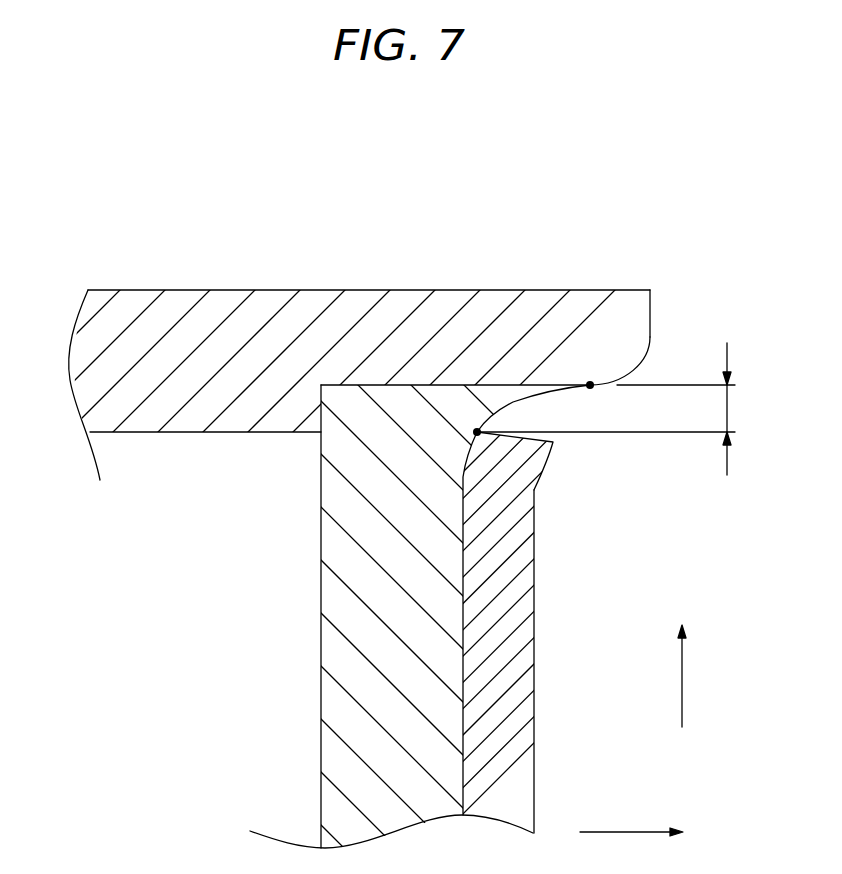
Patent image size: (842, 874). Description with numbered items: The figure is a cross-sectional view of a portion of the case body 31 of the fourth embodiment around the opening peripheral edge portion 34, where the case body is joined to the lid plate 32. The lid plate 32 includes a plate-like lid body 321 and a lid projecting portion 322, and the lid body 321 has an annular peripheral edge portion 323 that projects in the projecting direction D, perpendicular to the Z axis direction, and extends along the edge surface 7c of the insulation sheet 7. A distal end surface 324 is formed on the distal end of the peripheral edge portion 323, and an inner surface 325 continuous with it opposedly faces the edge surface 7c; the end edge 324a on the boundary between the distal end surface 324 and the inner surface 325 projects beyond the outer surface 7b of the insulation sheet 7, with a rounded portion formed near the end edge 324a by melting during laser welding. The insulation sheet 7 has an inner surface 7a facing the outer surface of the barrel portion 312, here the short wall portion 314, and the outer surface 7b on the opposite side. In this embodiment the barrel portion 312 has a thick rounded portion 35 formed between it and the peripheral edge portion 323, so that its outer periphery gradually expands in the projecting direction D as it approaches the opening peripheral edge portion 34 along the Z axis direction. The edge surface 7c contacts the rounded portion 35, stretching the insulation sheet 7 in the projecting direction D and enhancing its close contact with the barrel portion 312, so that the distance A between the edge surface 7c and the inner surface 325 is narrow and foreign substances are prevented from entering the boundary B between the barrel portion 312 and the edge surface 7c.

The insulation sheet 7 is at (455, 630).
The inner surface 7a is at (464, 572).
The outer surface 7b is at (534, 528).
The edge surface 7c is at (497, 423).
The case body 31 is at (421, 615).
The lid plate 32 is at (327, 314).
The opening peripheral edge portion 34 is at (372, 384).
The rounded portion 35 is at (493, 403).
The barrel portion 312 is at (421, 615).
The short wall portion 314 is at (337, 600).
The lid body 321 is at (327, 334).
The lid projecting portion 322 is at (233, 432).
The peripheral edge portion 323 is at (641, 264).
The distal end surface 324 is at (650, 318).
The end edge 324a is at (590, 385).
The inner surface 325 is at (519, 390).
The distance A is at (614, 409).
The boundary B is at (474, 430).
The Z axis direction Z is at (691, 676).
The projecting direction D is at (631, 819).